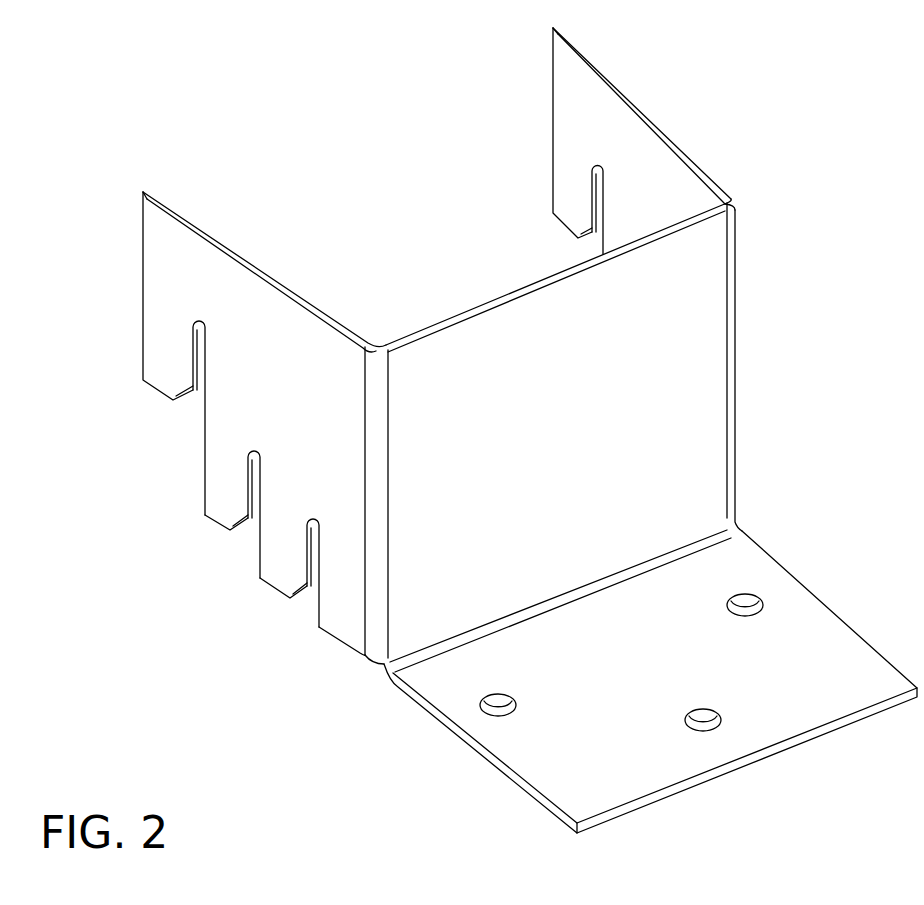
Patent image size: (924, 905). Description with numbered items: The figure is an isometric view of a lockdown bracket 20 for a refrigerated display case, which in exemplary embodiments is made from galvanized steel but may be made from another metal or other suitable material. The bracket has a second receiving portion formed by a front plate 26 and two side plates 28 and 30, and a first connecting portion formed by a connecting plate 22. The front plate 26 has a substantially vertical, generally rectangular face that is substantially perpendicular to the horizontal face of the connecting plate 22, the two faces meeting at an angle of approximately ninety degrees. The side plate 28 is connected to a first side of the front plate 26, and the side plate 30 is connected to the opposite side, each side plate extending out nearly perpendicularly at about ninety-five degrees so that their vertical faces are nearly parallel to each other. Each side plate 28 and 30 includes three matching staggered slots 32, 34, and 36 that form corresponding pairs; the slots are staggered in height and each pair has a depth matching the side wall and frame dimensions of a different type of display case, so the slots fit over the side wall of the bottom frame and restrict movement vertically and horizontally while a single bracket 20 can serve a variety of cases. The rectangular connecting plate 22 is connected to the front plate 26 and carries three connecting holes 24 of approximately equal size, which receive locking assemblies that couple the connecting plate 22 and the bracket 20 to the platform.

The lockdown bracket 20 is at (880, 156).
The connecting plate 22 is at (820, 643).
The connecting holes 24 is at (703, 732).
The front plate 26 is at (705, 403).
The side plate 28 is at (273, 313).
The side plate 30 is at (670, 175).
The slot 32 is at (200, 388).
The slot 34 is at (258, 508).
The slot 36 is at (318, 580).